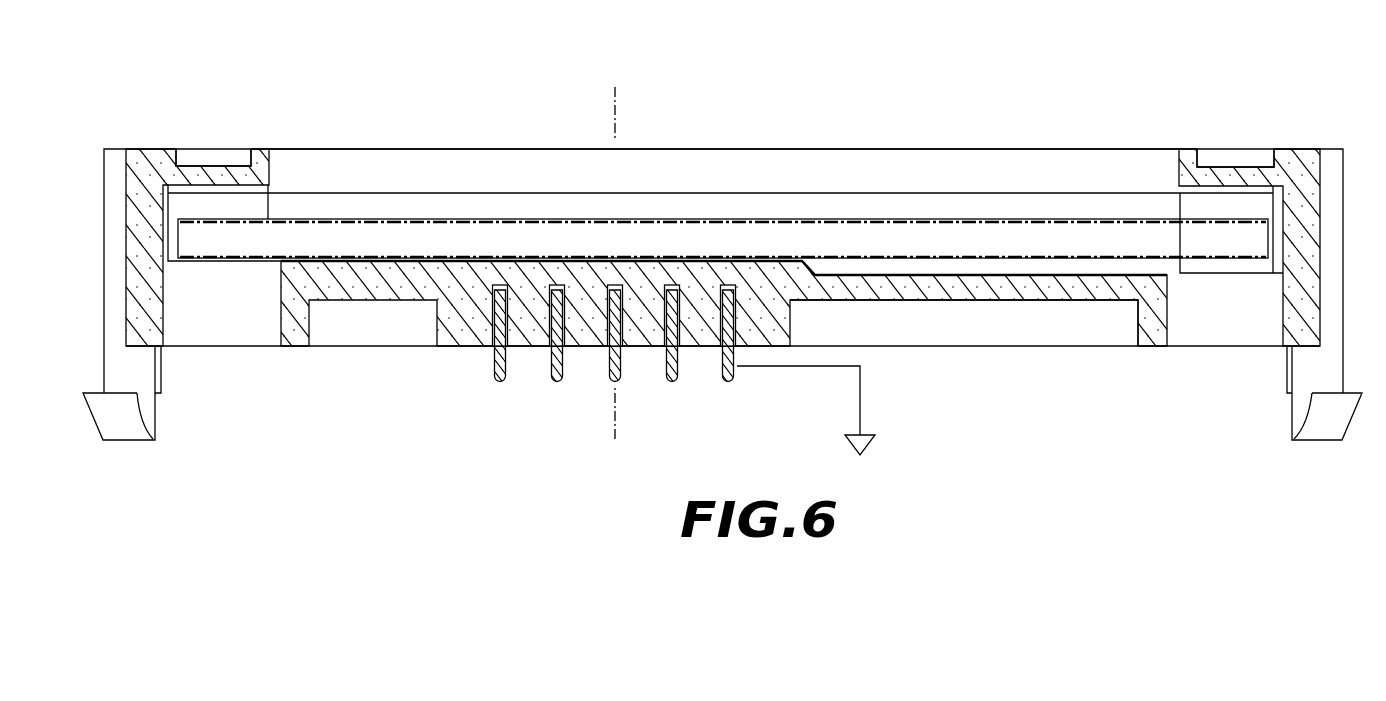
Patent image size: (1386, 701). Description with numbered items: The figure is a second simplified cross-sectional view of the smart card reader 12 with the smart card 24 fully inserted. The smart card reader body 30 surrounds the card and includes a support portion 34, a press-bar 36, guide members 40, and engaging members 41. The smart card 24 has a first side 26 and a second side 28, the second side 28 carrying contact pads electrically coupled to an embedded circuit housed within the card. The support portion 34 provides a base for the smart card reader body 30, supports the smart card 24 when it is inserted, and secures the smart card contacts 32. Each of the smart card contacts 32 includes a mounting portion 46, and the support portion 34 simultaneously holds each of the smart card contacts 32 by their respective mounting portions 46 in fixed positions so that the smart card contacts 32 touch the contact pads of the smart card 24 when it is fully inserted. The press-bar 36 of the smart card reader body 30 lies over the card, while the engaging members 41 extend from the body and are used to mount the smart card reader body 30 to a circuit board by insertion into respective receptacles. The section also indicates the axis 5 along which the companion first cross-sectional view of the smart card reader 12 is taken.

The smart card reader 12 is at (787, 66).
The smart card reader body 30 is at (340, 122).
The guide members 40 is at (190, 173).
The press-bar 36 is at (835, 175).
The first side 26 is at (952, 220).
The smart card 24 is at (1037, 233).
The second side 28 is at (945, 257).
The support portion 34 is at (1152, 333).
The mounting portion 46 is at (734, 333).
The smart card contacts 32 is at (762, 384).
The engaging members 41 is at (128, 427).
The axis 5 is at (615, 87).